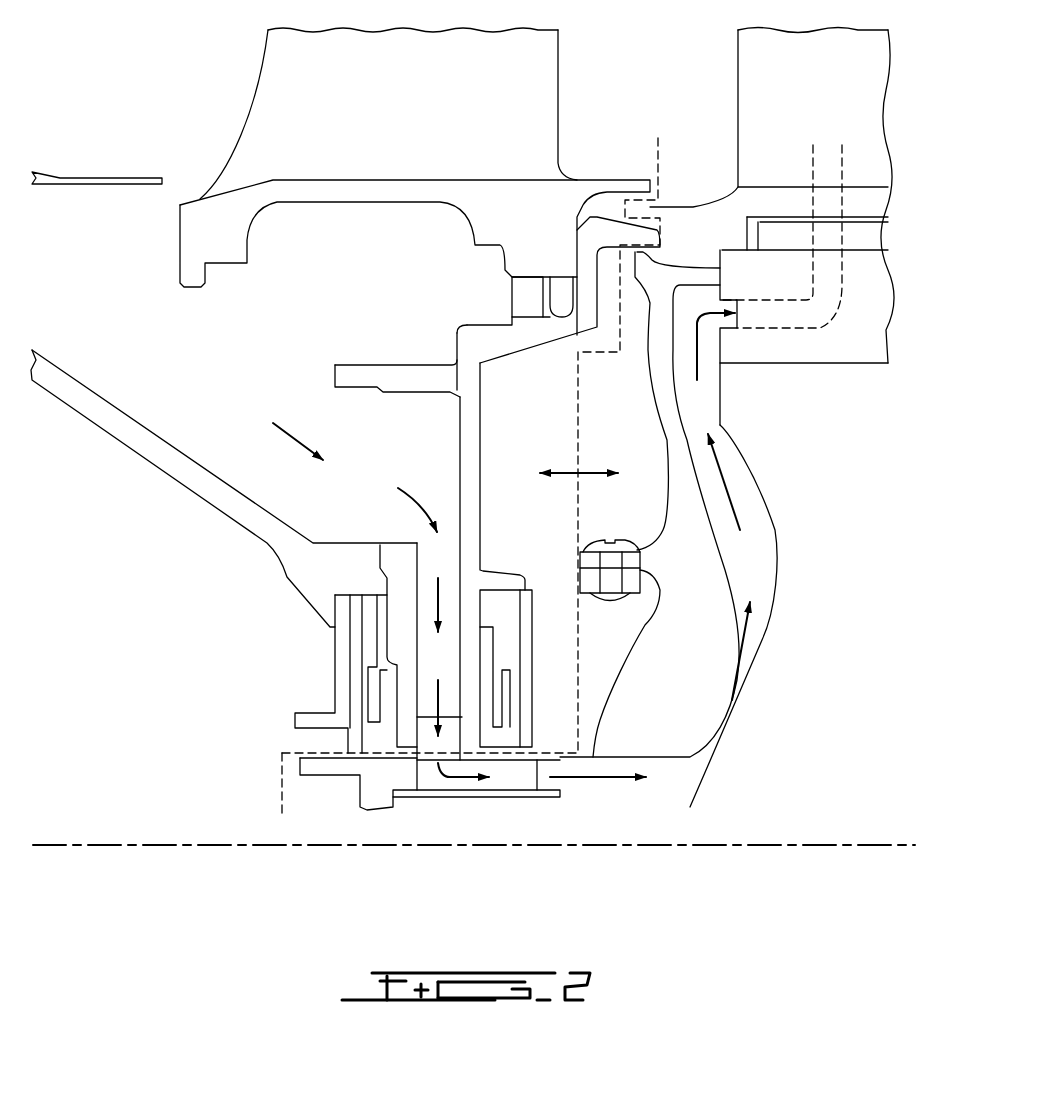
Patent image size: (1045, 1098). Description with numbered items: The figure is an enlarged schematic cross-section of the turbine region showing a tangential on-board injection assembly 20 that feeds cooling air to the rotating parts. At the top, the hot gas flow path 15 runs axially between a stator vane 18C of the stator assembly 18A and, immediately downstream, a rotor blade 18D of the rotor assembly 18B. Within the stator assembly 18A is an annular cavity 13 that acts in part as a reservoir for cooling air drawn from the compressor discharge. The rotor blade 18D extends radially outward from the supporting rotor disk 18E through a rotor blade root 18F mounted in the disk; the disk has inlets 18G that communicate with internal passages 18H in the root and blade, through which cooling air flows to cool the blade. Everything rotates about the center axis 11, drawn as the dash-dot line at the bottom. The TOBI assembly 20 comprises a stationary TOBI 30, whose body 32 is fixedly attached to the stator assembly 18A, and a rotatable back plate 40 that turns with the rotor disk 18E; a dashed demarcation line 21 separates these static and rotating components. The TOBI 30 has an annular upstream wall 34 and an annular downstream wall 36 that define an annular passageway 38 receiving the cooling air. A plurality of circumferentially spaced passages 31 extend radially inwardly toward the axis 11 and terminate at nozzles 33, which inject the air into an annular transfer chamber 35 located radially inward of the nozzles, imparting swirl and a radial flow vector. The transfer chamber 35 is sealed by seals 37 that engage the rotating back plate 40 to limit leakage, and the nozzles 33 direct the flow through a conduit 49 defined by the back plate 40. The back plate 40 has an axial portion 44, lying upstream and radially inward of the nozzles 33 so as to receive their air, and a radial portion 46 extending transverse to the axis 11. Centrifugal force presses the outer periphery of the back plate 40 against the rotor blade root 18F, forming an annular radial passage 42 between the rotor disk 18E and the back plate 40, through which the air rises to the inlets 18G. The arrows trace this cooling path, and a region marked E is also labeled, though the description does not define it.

The center axis 11 is at (858, 842).
The annular cavity 13 is at (203, 342).
The flow path 15 is at (626, 112).
The stator assembly 18A is at (200, 178).
The rotor assembly 18B is at (710, 148).
The stator vanes 18C is at (418, 122).
The rotor blades 18D is at (815, 112).
The supporting rotor disk 18E is at (850, 592).
The rotor blade root 18F is at (863, 335).
The inlets 18G is at (725, 330).
The internal passages 18H is at (832, 278).
The tangential on-board injection (TOBI) assembly 20 is at (413, 432).
The demarcation line 21 is at (577, 500).
The TOBI 30 is at (200, 530).
The passages 31 is at (433, 658).
The body 32 is at (283, 577).
The nozzles 33 is at (440, 727).
The annular upstream wall 34 is at (158, 450).
The annular transfer chamber 35 is at (423, 742).
The annular downstream wall 36 is at (473, 428).
The seals 37 is at (355, 742).
The annular passageway 38 is at (370, 504).
The back plate 40 is at (673, 718).
The radial passage 42 is at (755, 560).
The axial portion 44 is at (540, 805).
The radial portion 46 is at (684, 521).
The conduit 49 is at (502, 790).
The engine region E is at (150, 704).